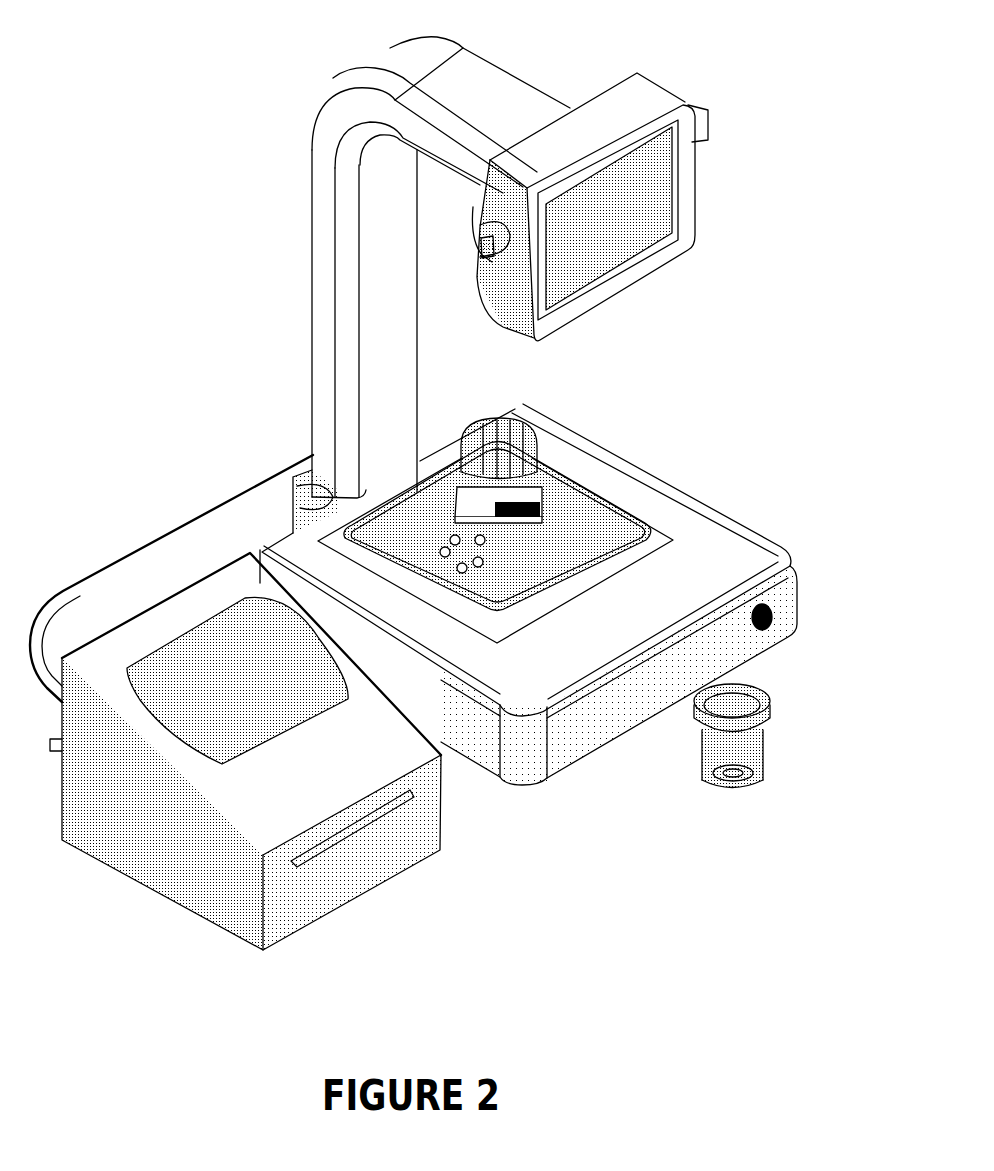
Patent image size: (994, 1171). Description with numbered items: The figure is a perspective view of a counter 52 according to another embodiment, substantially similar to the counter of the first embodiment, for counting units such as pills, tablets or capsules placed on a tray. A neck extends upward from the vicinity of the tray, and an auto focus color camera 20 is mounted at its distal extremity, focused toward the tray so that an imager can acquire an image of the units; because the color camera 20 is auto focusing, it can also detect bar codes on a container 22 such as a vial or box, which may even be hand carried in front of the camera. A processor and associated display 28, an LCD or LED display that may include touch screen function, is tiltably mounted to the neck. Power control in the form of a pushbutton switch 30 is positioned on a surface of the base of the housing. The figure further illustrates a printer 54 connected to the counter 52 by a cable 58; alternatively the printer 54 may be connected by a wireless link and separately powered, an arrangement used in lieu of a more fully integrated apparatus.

The auto focus color camera 20 is at (468, 187).
The container 22 is at (530, 492).
The display 28 is at (692, 212).
The pushbutton switch 30 is at (768, 630).
The counter 52 is at (112, 155).
The printer 54 is at (415, 852).
The cable 58 is at (245, 713).